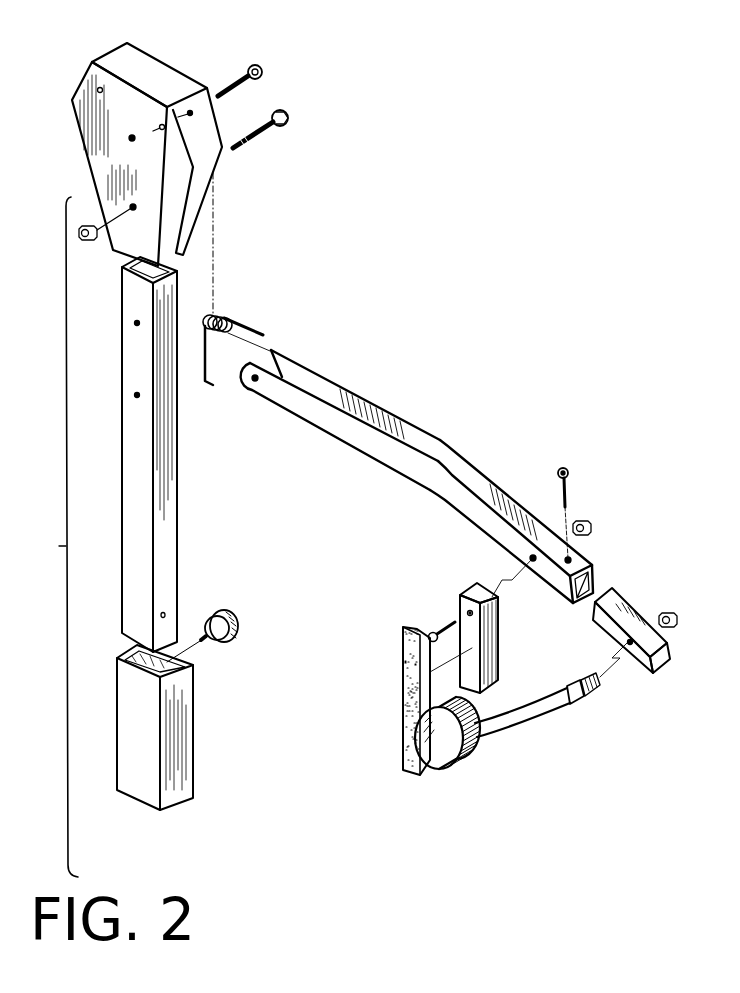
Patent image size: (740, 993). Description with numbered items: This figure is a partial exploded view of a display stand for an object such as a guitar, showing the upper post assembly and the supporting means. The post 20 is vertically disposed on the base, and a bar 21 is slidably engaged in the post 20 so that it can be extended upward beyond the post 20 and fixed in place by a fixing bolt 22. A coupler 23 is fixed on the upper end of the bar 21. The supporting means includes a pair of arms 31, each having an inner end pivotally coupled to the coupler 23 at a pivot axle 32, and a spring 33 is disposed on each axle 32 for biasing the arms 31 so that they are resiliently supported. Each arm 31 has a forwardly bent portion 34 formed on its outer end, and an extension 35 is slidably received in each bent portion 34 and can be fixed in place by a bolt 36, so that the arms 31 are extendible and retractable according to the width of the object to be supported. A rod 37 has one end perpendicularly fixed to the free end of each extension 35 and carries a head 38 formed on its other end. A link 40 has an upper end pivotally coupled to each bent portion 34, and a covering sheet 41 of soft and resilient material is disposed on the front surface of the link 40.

The post 20 is at (183, 741).
The bar 21 is at (170, 442).
The fixing bolt 22 is at (237, 621).
The coupler 23 is at (133, 60).
The arm 31 is at (362, 402).
The pivot axle 32 is at (241, 70).
The spring 33 is at (220, 311).
The forwardly bent portion 34 is at (480, 485).
The extension 35 is at (613, 600).
The bolt 36 is at (565, 470).
The rod 37 is at (547, 710).
The head 38 is at (447, 757).
The link 40 is at (467, 584).
The covering sheet 41 is at (412, 658).